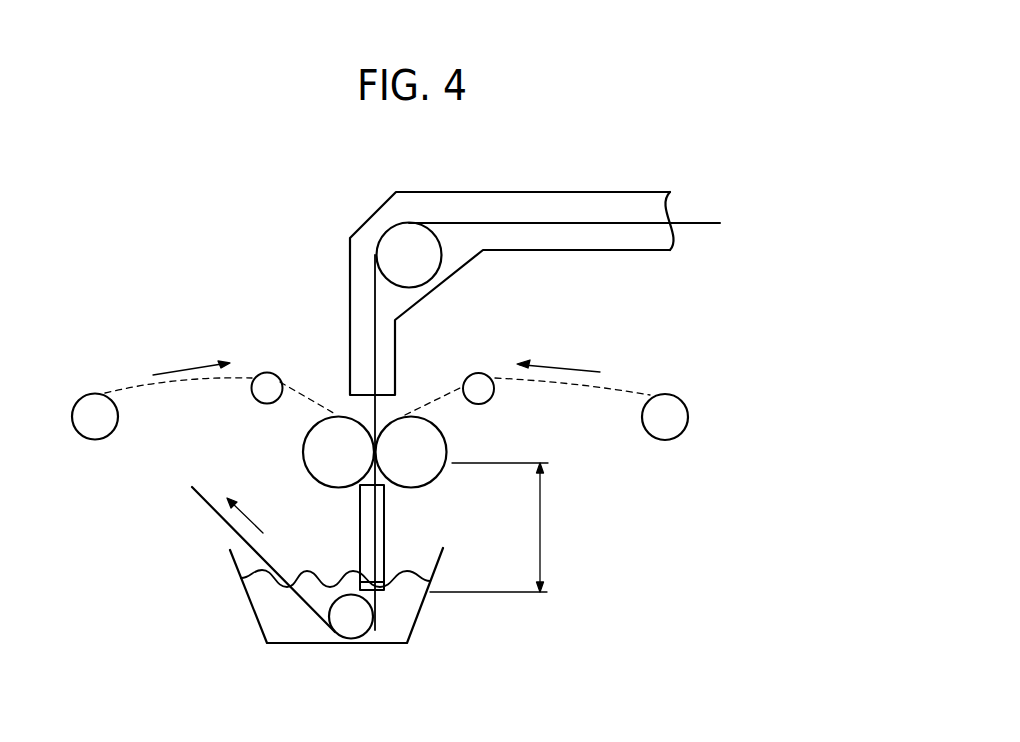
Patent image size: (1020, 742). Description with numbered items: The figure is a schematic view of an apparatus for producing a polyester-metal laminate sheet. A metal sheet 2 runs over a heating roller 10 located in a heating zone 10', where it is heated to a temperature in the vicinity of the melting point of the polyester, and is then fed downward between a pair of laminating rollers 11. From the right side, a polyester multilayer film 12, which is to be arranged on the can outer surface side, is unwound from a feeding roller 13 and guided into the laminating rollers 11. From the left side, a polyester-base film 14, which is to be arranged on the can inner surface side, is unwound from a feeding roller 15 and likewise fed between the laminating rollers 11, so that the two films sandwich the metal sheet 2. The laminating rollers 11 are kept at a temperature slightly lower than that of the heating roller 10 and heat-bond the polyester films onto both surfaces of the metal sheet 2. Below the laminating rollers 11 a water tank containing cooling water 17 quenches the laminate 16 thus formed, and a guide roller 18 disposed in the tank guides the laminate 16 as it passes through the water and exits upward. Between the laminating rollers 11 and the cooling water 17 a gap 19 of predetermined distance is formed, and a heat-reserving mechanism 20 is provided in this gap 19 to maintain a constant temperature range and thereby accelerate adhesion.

The metal sheet 2 is at (718, 223).
The heating roller 10 is at (447, 269).
The heating zone 10' is at (512, 258).
The laminating rollers 11 is at (302, 452).
The polyester multilayer film 12 is at (612, 387).
The feeding roller 13 is at (688, 413).
The polyester-base film 14 is at (147, 388).
The feeding roller 15 is at (93, 440).
The laminate 16 is at (373, 593).
The cooling water 17 is at (413, 607).
The guide roller 18 is at (343, 645).
The gap 19 is at (505, 527).
The heat-reserving mechanism 20 is at (384, 545).